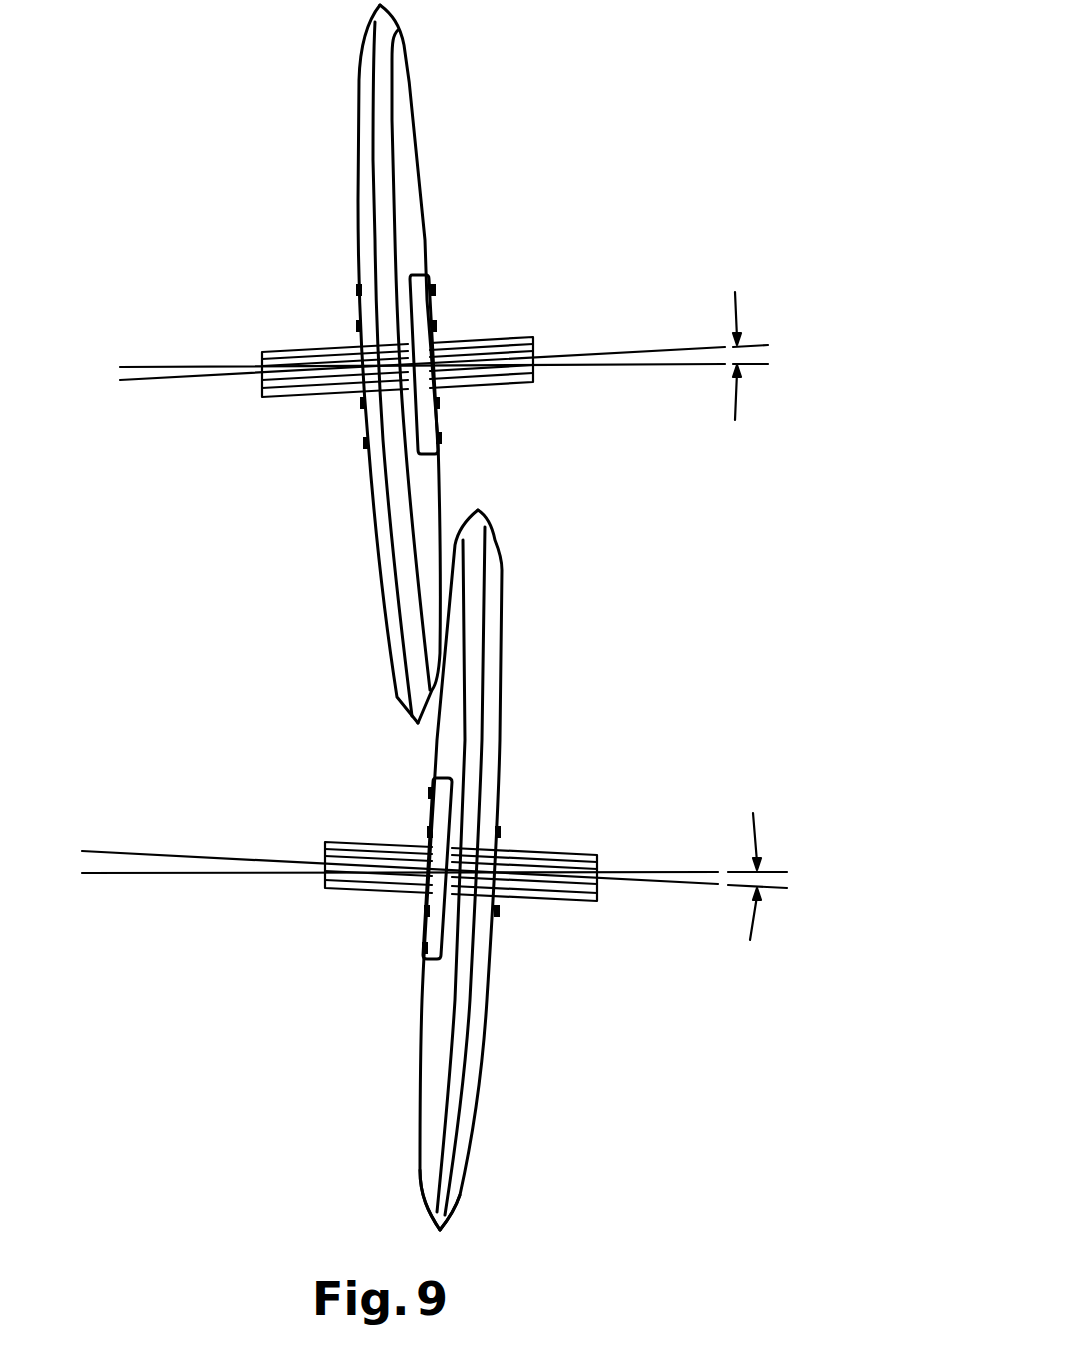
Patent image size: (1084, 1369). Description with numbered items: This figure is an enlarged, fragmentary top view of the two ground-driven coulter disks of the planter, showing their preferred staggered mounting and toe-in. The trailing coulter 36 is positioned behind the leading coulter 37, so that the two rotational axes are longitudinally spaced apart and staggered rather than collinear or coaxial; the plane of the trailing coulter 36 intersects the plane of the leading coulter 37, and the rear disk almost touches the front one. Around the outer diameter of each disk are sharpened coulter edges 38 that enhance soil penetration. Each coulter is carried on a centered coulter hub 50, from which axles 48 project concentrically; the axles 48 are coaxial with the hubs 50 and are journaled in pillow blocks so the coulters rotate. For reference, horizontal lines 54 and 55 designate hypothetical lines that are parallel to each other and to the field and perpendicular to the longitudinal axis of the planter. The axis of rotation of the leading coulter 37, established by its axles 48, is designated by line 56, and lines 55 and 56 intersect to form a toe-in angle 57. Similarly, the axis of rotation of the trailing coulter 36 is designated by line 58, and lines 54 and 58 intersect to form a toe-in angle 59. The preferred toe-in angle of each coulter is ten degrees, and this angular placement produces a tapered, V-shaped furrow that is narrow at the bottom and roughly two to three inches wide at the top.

The trailing coulter 36 is at (412, 195).
The leading coulter 37 is at (497, 680).
The coulter edge 38 is at (433, 1208).
The axle 48 is at (292, 353).
The coulter hub 50 is at (428, 282).
The horizontal reference line 54 is at (148, 365).
The horizontal reference line 55 is at (128, 876).
The axis of rotation line 56 is at (162, 851).
The toe-in angle 57 is at (793, 880).
The axis of rotation line 58 is at (150, 380).
The toe-in angle 59 is at (771, 351).